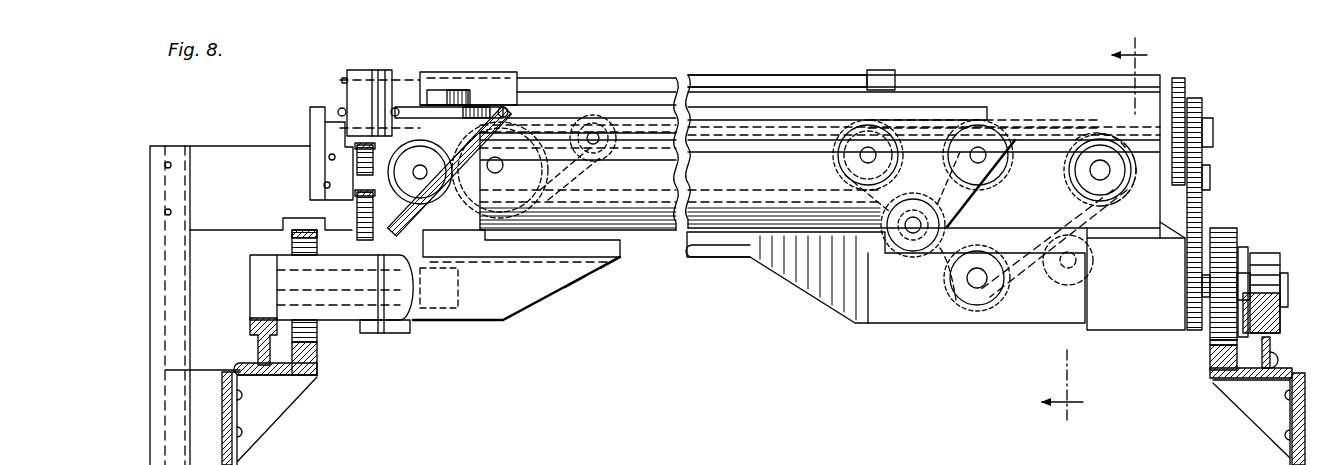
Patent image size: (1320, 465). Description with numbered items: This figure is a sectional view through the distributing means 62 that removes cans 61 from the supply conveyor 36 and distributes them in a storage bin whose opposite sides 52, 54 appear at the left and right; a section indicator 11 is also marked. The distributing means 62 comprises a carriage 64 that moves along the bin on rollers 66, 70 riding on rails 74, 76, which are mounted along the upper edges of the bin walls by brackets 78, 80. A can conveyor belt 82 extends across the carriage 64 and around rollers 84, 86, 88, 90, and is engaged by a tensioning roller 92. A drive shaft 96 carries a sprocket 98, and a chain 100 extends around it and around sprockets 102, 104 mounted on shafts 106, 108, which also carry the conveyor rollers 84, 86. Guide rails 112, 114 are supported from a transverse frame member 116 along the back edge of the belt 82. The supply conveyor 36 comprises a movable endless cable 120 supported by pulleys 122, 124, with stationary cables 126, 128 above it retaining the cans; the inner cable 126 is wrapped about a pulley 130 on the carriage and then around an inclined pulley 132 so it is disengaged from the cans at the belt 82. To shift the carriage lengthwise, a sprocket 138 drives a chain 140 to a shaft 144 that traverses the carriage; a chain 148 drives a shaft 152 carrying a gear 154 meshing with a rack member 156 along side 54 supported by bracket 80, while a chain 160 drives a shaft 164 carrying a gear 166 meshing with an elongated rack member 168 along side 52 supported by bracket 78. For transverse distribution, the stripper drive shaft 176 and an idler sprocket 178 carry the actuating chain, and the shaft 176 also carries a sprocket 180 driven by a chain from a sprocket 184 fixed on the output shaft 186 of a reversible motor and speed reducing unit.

The section line 11- 11 is at (1178, 62).
The supply conveyor 36 is at (250, 112).
The side of storage bin 52 is at (280, 462).
The side of storage bin 54 is at (1210, 437).
The cans 61 is at (370, 72).
The distributing means 62 is at (610, 284).
The carriage 64 is at (574, 290).
The roller 66 is at (265, 312).
The roller 70 is at (1260, 270).
The rail 74 is at (370, 367).
The rail 76 is at (1282, 368).
The bracket 78 is at (280, 397).
The bracket 80 is at (1238, 390).
The can conveyor belt 82 is at (648, 144).
The conveyor roller 84 is at (1090, 180).
The conveyor roller 86 is at (1055, 255).
The conveyor roller 88 is at (905, 250).
The conveyor roller 90 is at (405, 180).
The tensioning roller 92 is at (1038, 318).
The drive shaft 96 is at (857, 51).
The sprocket 98 is at (840, 170).
The chain 100 is at (1013, 128).
The sprocket 102 is at (1068, 163).
The sprocket 104 is at (965, 210).
The shaft 106 is at (1078, 112).
The shaft 108 is at (930, 300).
The guide rail 112 is at (785, 59).
The guide rail 114 is at (750, 37).
The transverse frame member 116 is at (945, 51).
The movable endless cable 120 is at (265, 133).
The pulley 122 is at (255, 170).
The pulley 124 is at (255, 212).
The stationary cable 126 is at (425, 58).
The stationary cable 128 is at (290, 92).
The pulley 130 is at (505, 56).
The pulley 132 is at (495, 287).
The sprocket 138 is at (518, 356).
The drive chain 140 is at (1232, 59).
The shaft 144 is at (1255, 84).
The drive chain 148 is at (1250, 172).
The shaft 152 is at (1308, 243).
The gear 154 is at (1262, 194).
The rack member 156 is at (1168, 365).
The chain 160 is at (410, 322).
The shaft 164 is at (237, 273).
The gear 166 is at (242, 243).
The elongated rack member 168 is at (383, 347).
The drive shaft 176 is at (512, 276).
The idler sprocket 178 is at (978, 148).
The sprocket 180 is at (532, 126).
The sprocket 184 is at (612, 142).
The output shaft 186 is at (596, 132).